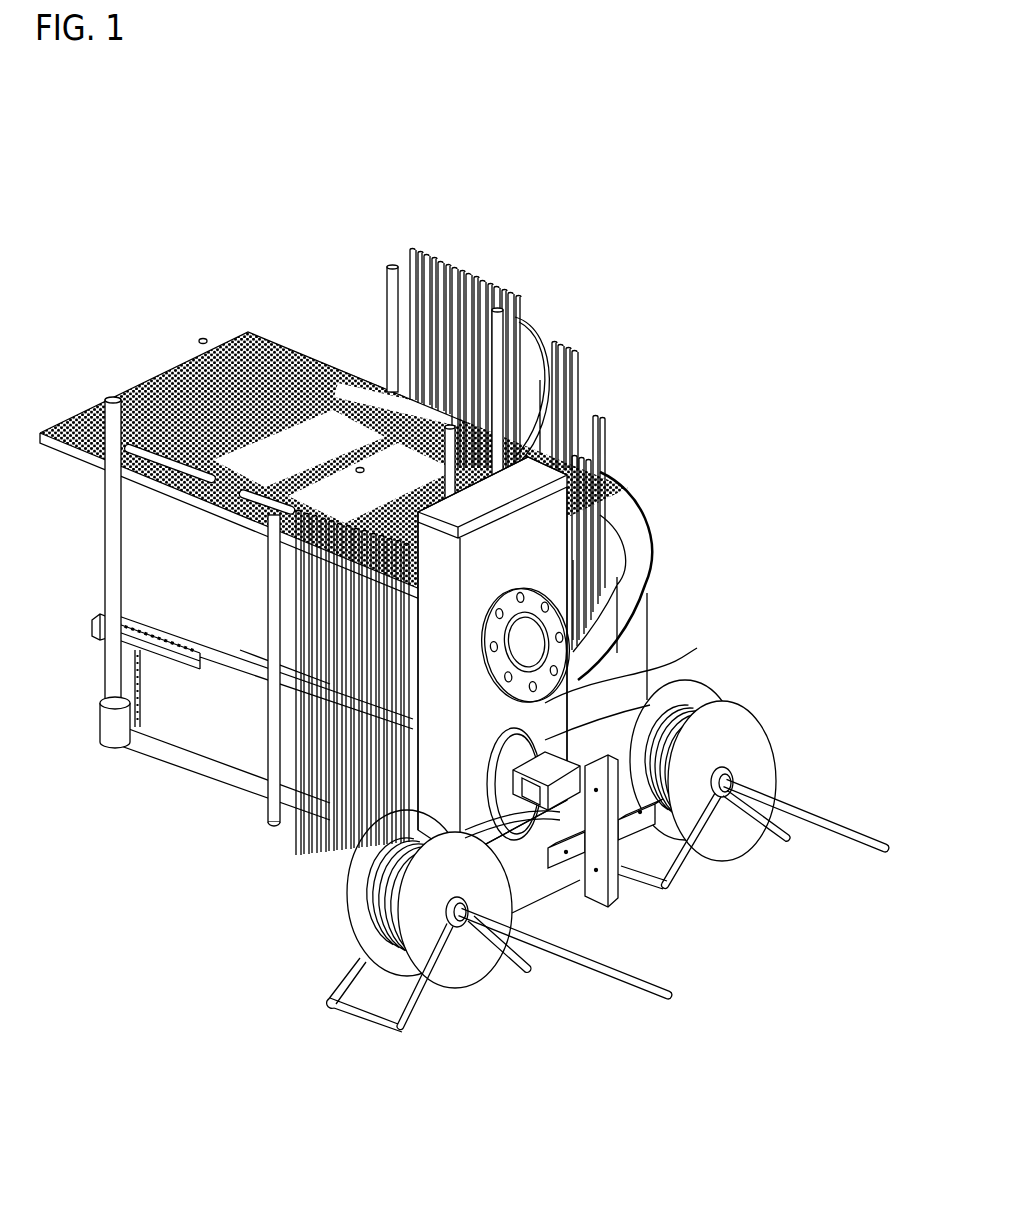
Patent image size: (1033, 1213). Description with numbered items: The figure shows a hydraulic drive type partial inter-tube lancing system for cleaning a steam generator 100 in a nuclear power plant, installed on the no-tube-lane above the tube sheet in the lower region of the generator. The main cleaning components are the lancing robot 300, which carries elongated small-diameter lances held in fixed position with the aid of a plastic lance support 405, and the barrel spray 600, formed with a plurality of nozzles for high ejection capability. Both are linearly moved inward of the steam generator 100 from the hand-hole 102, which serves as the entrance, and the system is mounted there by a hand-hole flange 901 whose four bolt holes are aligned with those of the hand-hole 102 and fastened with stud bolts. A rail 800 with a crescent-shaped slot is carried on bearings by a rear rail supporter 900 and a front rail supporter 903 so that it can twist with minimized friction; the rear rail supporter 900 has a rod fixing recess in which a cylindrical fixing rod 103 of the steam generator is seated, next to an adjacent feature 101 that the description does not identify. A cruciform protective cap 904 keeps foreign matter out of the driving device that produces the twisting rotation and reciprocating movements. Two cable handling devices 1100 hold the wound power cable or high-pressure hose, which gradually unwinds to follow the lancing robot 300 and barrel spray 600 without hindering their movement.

The steam generator 100 is at (567, 717).
The curved guide 101 is at (577, 542).
The hand-hole 102 is at (628, 628).
The cylindrical fixing rod 103 is at (107, 538).
The lancing robot 300 is at (190, 668).
The plastic lance support 405 is at (130, 698).
The barrel spray 600 is at (150, 624).
The rail 800 is at (253, 663).
The rear rail supporter 900 is at (93, 624).
The hand-hole flange 901 is at (540, 690).
The front rail supporter 903 is at (702, 724).
The cruciform protective cap 904 is at (613, 890).
The cable handling device 1100 is at (457, 963).